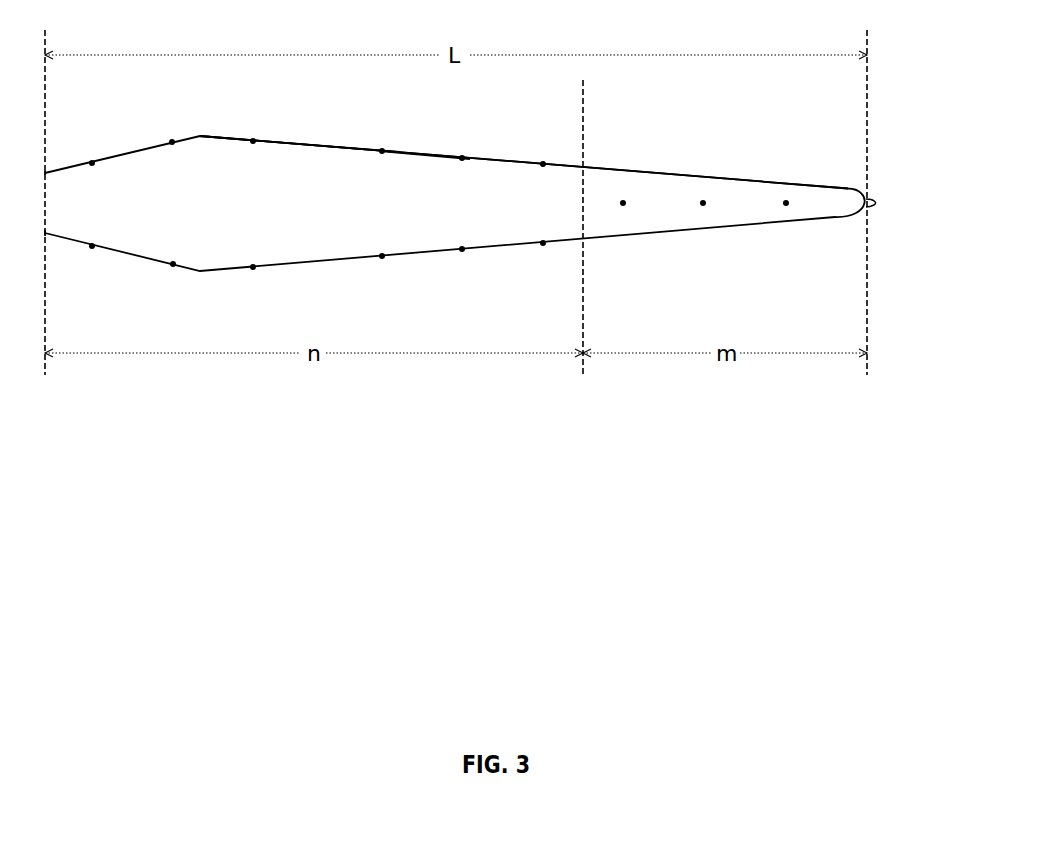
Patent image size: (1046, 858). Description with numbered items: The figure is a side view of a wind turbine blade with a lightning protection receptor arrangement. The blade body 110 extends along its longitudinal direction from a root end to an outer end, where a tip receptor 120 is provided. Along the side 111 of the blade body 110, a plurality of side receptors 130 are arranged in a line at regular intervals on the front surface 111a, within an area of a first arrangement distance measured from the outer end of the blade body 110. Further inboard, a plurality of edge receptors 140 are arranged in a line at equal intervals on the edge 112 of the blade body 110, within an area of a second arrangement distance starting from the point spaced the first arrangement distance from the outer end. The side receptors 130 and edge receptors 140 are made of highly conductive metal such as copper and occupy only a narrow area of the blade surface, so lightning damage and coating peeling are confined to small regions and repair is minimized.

The blade body 110 is at (732, 235).
The side 111 is at (423, 152).
The front surface 111a is at (423, 152).
The edge 112 is at (343, 147).
The tip receptor 120 is at (878, 203).
The side receptor 130 is at (703, 203).
The edge receptor 140 is at (172, 141).